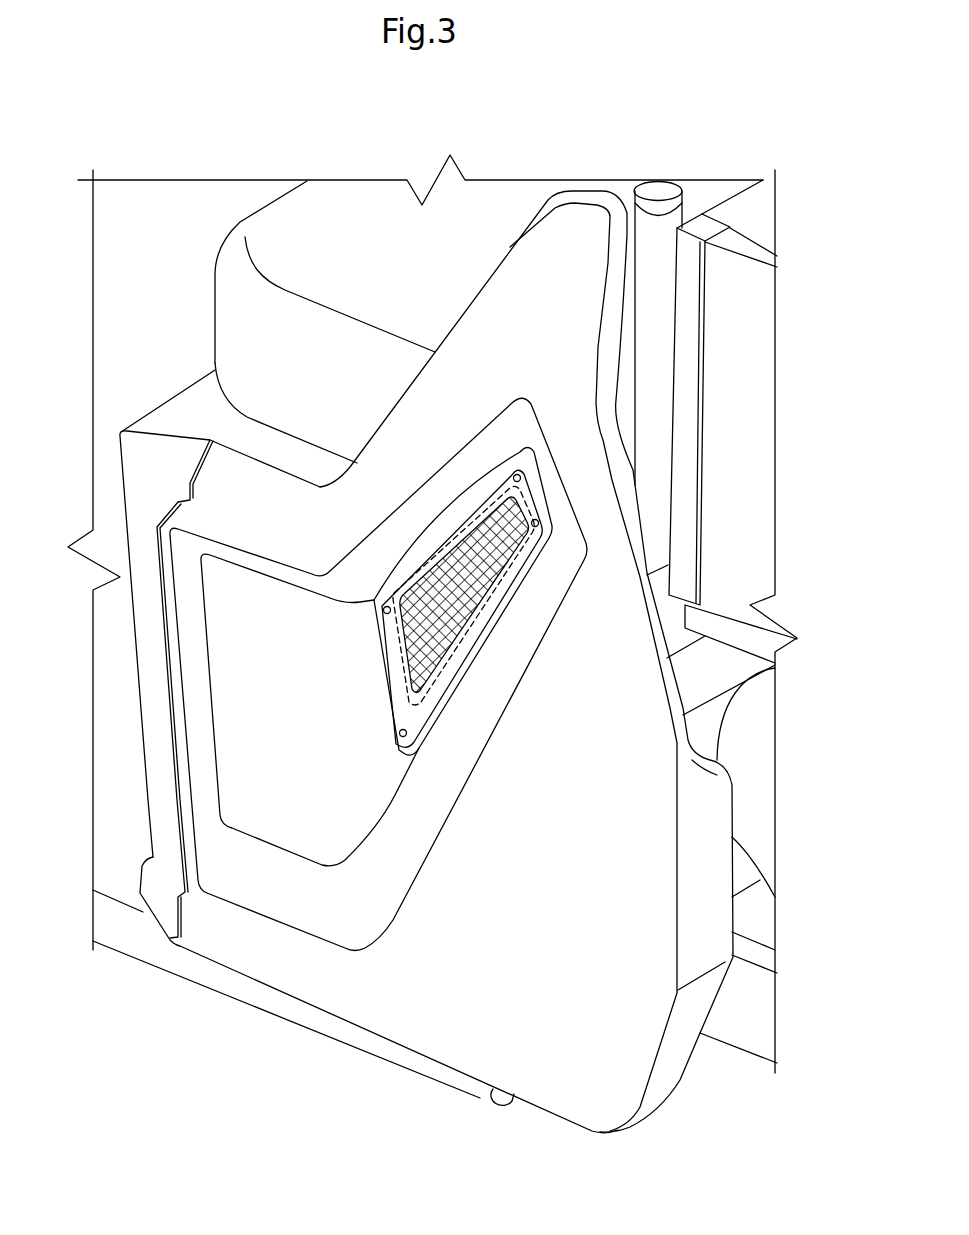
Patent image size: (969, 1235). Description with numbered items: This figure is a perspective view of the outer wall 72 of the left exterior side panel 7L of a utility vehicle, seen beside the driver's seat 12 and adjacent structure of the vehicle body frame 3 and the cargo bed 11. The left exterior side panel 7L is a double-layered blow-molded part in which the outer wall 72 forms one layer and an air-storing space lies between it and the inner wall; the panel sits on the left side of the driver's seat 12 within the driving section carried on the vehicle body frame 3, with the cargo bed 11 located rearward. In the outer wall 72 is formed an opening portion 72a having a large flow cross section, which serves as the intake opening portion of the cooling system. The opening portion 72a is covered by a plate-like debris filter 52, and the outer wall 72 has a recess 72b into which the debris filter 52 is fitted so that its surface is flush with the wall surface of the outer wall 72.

The vehicle body frame 3 is at (130, 953).
The cargo bed 11 is at (748, 333).
The driver's seat 12 is at (207, 253).
The left exterior side panel 7L is at (395, 1085).
The debris filter 52 is at (473, 558).
The outer wall 72 is at (577, 1045).
The opening portion 72a is at (400, 686).
The recess 72b is at (387, 641).